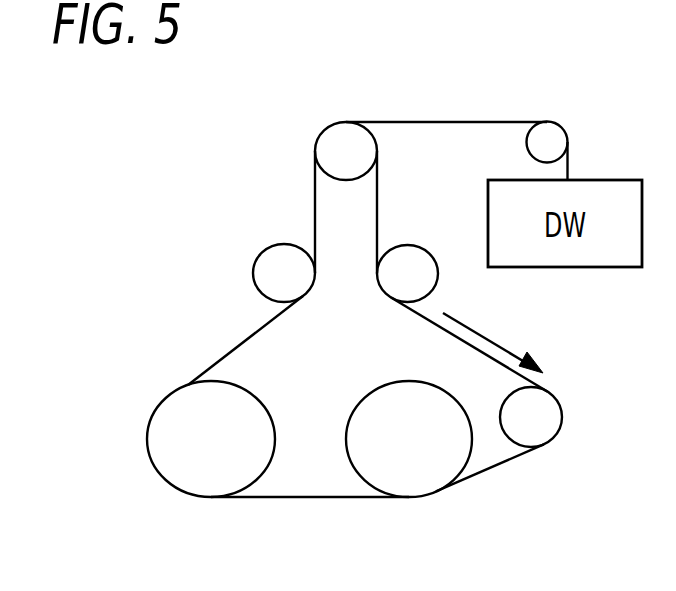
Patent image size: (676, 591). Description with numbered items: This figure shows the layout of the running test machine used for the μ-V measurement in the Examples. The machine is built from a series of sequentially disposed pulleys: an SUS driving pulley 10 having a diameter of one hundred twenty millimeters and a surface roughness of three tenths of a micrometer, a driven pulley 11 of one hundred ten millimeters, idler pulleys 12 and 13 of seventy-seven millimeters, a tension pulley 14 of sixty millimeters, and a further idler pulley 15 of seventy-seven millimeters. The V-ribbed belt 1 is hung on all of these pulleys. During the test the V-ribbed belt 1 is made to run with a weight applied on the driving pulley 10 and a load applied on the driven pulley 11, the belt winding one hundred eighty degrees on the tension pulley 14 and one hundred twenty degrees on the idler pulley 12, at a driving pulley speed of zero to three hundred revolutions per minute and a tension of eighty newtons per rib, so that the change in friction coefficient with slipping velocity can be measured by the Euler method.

The V-ribbed belt 1 is at (225, 352).
The driving pulley 10 is at (148, 423).
The driven pulley 11 is at (418, 497).
The idler pulley 12 is at (562, 405).
The idler pulley 13 is at (428, 252).
The tension pulley 14 is at (315, 152).
The idler pulley 15 is at (270, 248).